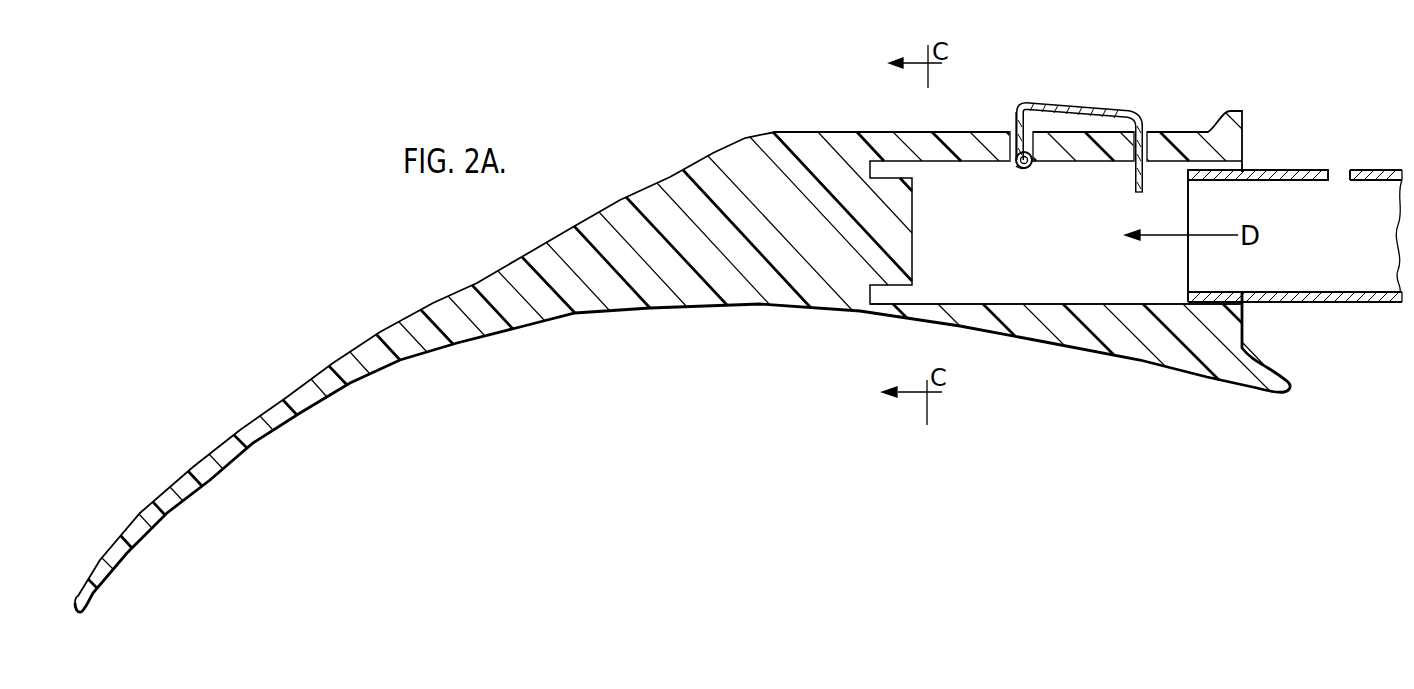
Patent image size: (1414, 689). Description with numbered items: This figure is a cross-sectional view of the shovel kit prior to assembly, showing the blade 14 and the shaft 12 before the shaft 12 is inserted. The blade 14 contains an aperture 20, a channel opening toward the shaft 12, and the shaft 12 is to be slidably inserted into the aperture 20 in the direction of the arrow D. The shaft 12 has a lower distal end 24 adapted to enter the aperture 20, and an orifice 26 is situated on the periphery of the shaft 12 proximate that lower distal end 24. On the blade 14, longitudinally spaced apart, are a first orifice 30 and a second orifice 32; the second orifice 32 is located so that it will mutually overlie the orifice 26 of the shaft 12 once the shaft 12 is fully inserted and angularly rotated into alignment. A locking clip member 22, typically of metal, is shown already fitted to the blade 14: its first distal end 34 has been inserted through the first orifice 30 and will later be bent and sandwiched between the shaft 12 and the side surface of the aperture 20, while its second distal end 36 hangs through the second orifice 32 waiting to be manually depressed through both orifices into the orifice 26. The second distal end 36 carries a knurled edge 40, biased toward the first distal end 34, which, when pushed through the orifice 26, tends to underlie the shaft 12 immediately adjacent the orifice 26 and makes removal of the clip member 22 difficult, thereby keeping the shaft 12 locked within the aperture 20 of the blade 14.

The shaft 12 is at (1393, 170).
The blade 14 is at (668, 308).
The aperture 20 is at (1050, 255).
The locking clip member 22 is at (1097, 107).
The lower distal end 24 is at (1182, 262).
The orifice 26 is at (1342, 172).
The first orifice 30 is at (1158, 133).
The second orifice 32 is at (1010, 140).
The first distal end 34 is at (1137, 178).
The second distal end 36 is at (1015, 130).
The knurled edge 40 is at (1023, 170).